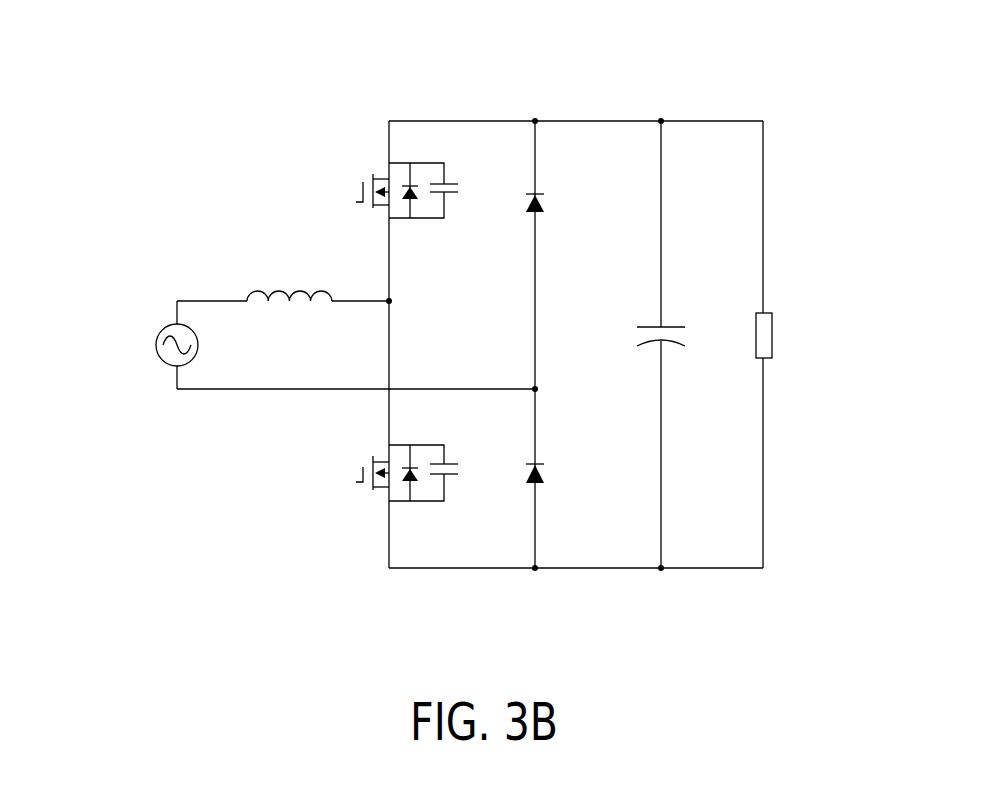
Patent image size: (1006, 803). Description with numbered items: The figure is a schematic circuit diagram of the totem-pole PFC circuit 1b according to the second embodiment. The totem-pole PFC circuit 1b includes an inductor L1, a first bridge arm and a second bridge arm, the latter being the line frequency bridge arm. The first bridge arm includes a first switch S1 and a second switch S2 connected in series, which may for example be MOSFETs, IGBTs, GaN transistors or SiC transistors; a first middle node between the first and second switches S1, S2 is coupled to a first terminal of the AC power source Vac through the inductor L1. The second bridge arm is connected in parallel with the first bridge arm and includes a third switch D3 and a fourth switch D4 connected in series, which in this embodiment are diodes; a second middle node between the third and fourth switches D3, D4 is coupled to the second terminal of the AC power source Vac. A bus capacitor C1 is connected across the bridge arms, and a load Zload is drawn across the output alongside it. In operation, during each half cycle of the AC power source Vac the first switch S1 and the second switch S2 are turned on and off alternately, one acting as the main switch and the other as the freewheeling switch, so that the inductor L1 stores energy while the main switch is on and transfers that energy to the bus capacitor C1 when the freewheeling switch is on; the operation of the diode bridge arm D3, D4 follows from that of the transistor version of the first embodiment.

The totem-pole PFC circuit 1b is at (978, 88).
The AC power source Vac is at (172, 345).
The inductor L1 is at (289, 276).
The first switch S1 is at (394, 188).
The second switch S2 is at (395, 485).
The third switch D3 is at (558, 204).
The fourth switch D4 is at (558, 474).
The bus capacitor C1 is at (642, 341).
The load impedance Zload is at (803, 335).